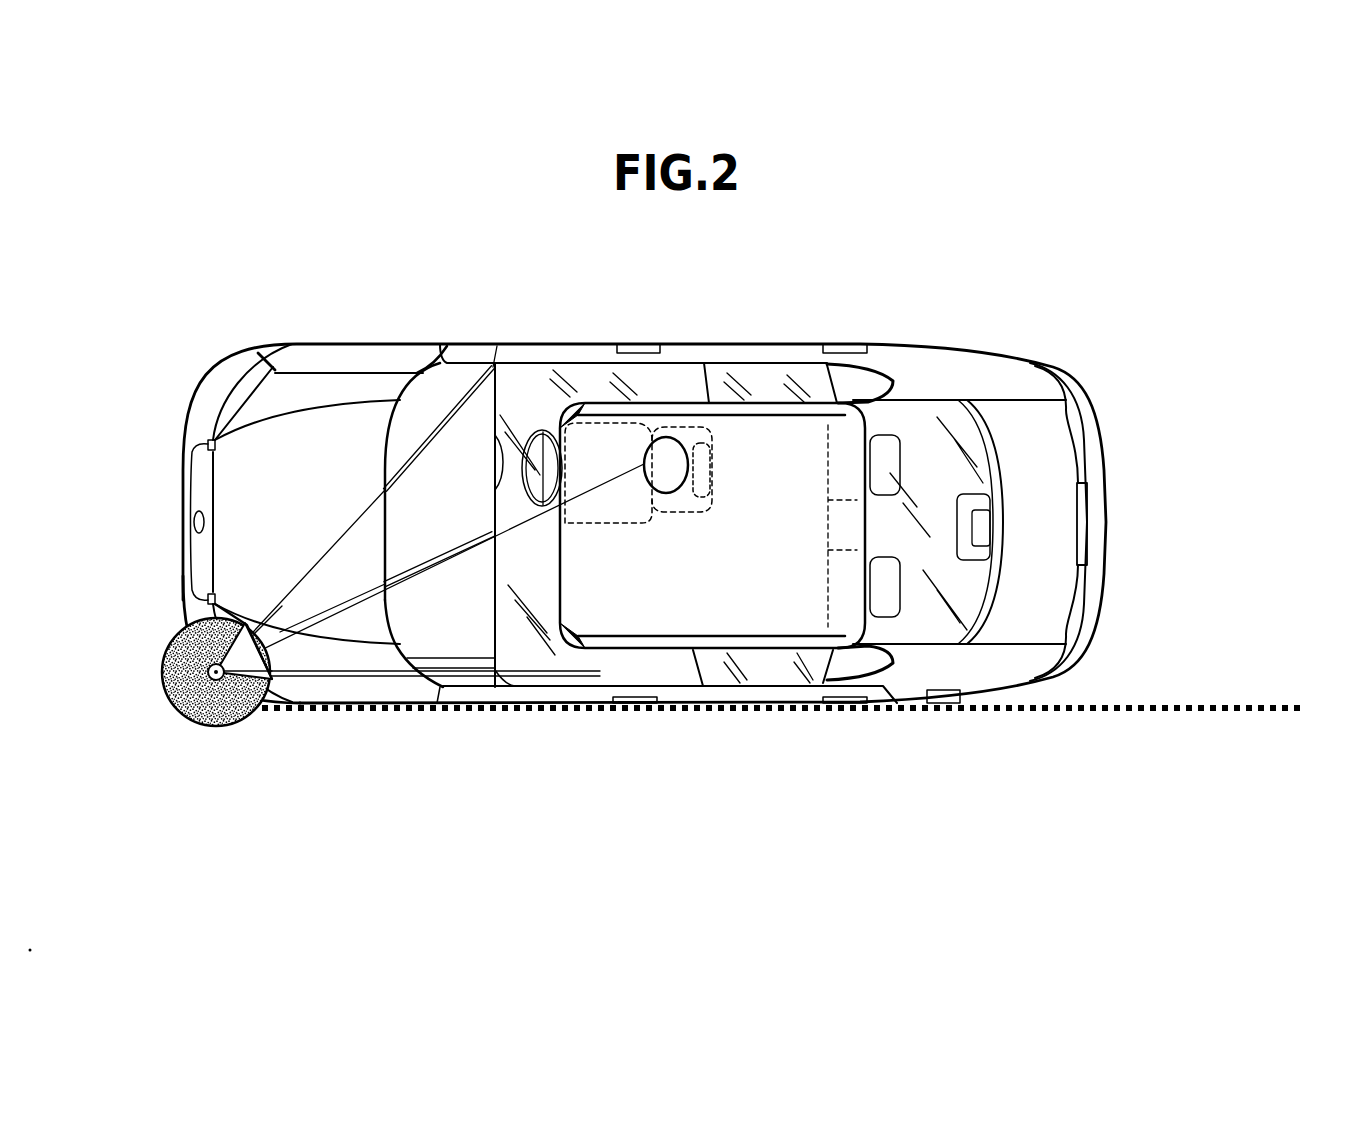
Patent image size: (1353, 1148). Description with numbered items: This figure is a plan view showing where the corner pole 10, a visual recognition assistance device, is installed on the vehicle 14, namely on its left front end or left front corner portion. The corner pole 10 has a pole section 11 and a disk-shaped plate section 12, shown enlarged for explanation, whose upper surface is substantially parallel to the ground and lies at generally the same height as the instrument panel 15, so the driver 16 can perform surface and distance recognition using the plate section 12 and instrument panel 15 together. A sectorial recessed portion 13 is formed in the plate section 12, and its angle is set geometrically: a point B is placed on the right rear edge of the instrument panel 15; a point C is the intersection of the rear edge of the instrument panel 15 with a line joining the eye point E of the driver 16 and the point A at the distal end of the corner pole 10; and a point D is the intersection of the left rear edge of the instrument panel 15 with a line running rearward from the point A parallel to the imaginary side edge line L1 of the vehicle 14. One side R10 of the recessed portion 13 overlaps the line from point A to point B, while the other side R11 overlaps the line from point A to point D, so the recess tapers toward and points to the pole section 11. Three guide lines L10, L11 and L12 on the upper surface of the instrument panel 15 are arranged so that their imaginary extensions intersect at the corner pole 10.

The corner pole 10 is at (140, 742).
The pole section 11 is at (211, 680).
The plate section 12 is at (225, 715).
The sectorial recessed portion 13 is at (262, 636).
The vehicle 14 is at (693, 292).
The instrument panel 15 is at (387, 443).
The driver 16 is at (683, 445).
The point A is at (207, 670).
The point B is at (497, 346).
The point C is at (497, 540).
The point D is at (503, 687).
The eye point E is at (670, 483).
The imaginary side edge line L1 is at (1142, 710).
The guide line L10 is at (447, 420).
The guide line L11 is at (425, 566).
The guide line L12 is at (457, 660).
The side of recessed portion R10 is at (262, 620).
The side of recessed portion R11 is at (297, 672).